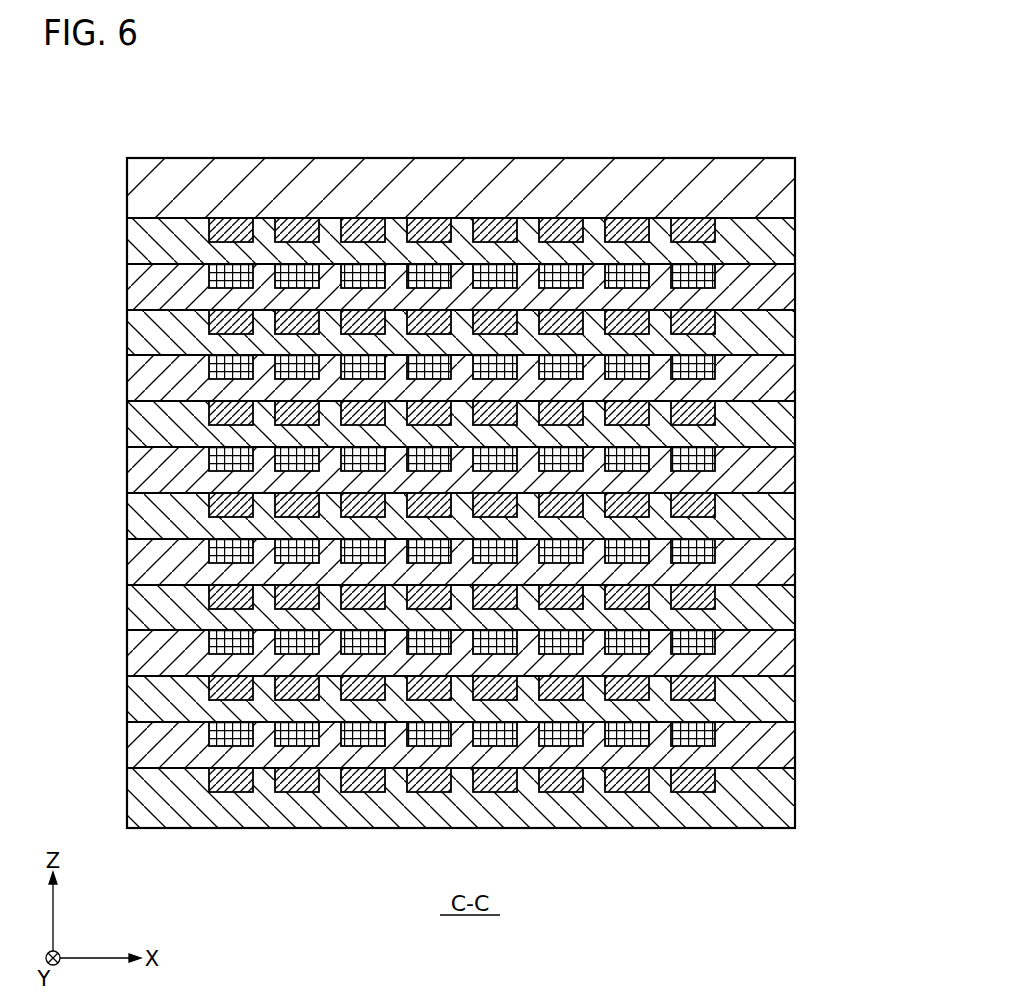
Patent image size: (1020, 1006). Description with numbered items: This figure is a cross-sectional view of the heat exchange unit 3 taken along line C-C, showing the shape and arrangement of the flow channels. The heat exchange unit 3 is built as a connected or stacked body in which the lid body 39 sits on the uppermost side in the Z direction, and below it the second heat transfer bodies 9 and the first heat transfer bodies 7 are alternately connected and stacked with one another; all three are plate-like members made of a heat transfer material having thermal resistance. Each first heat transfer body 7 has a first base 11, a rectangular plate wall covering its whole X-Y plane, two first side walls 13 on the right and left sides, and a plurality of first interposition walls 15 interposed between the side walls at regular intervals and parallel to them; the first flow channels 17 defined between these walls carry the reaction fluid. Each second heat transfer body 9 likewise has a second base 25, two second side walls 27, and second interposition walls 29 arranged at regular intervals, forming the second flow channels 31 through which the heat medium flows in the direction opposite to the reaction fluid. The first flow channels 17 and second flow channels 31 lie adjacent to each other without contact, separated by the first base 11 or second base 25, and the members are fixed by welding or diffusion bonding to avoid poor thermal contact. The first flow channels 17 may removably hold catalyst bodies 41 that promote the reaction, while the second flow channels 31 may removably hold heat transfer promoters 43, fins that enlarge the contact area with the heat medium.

The heat exchange unit 3 is at (466, 447).
The first heat transfer body 7 is at (466, 440).
The second heat transfer body 9 is at (466, 470).
The first base 11 is at (233, 393).
The first side wall 13 is at (140, 272).
The first interposition wall 15 is at (327, 265).
The first flow channel 17 is at (592, 265).
The second base 25 is at (297, 254).
The second side wall 27 is at (174, 220).
The second interposition wall 29 is at (660, 218).
The second flow channel 31 is at (528, 227).
The lid body 39 is at (692, 162).
The catalyst body 41 is at (212, 557).
The heat transfer promoter 43 is at (210, 422).